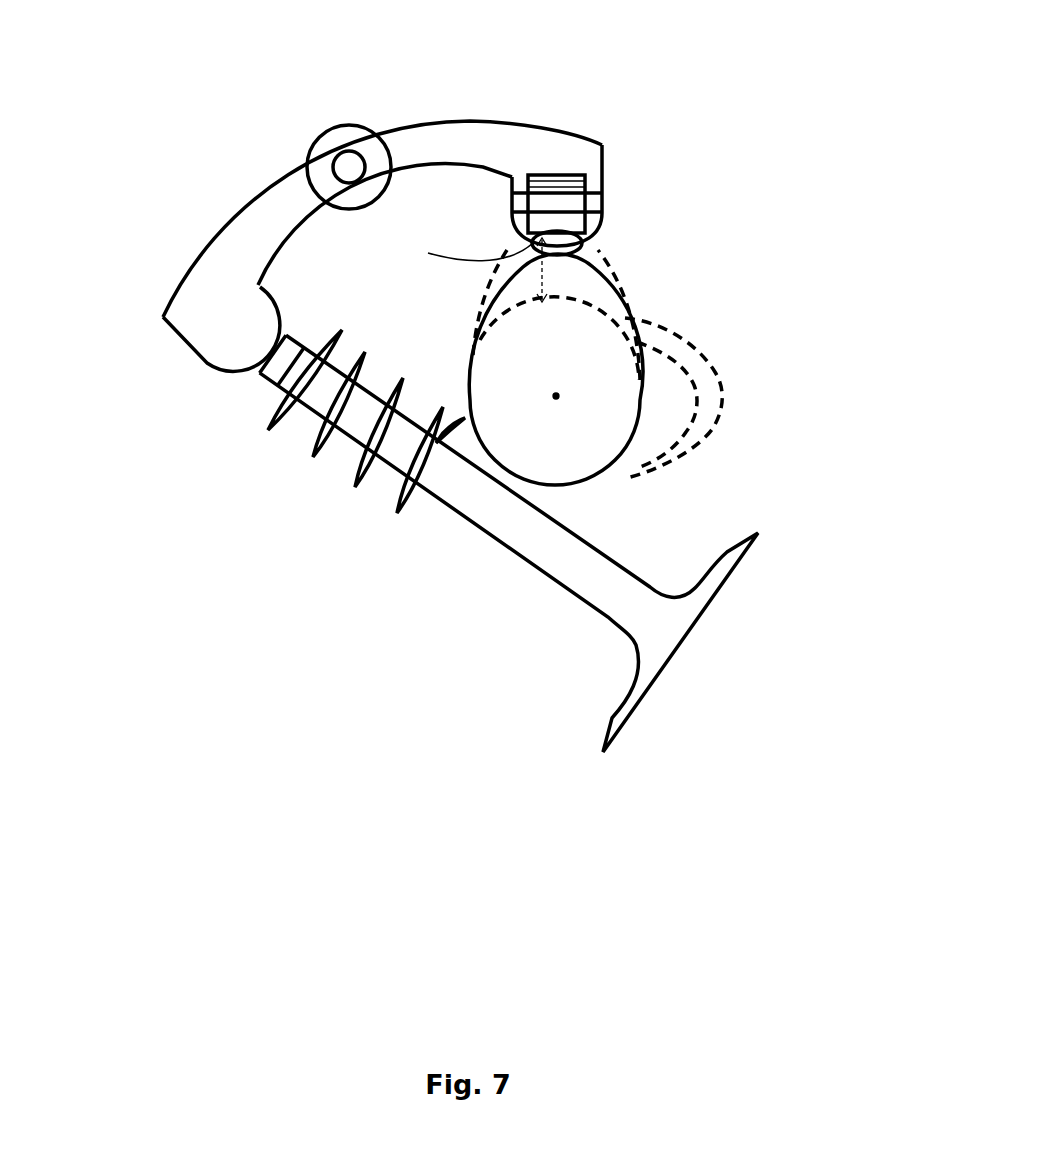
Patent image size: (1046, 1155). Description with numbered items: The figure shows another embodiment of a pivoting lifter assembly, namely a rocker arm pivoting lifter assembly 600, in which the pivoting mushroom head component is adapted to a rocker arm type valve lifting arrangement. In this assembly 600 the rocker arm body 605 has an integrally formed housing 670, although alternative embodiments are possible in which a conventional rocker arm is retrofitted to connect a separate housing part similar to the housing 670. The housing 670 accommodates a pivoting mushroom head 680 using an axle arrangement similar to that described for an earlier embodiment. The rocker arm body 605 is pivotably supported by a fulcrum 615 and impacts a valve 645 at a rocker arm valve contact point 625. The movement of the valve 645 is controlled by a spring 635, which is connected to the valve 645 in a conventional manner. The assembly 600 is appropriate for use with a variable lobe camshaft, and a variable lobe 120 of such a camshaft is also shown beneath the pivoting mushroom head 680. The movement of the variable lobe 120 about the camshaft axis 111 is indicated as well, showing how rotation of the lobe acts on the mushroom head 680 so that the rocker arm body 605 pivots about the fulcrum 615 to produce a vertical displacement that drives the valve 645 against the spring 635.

The rocker arm pivoting lifter assembly 600 is at (363, 617).
The rocker arm body 605 is at (460, 132).
The fulcrum 615 is at (326, 158).
The rocker arm valve contact point 625 is at (242, 335).
The spring 635 is at (397, 500).
The valve 645 is at (527, 555).
The housing 670 is at (590, 167).
The pivoting mushroom head 680 is at (565, 243).
The variable lobe 120 is at (557, 287).
The camshaft axis 111 is at (556, 396).